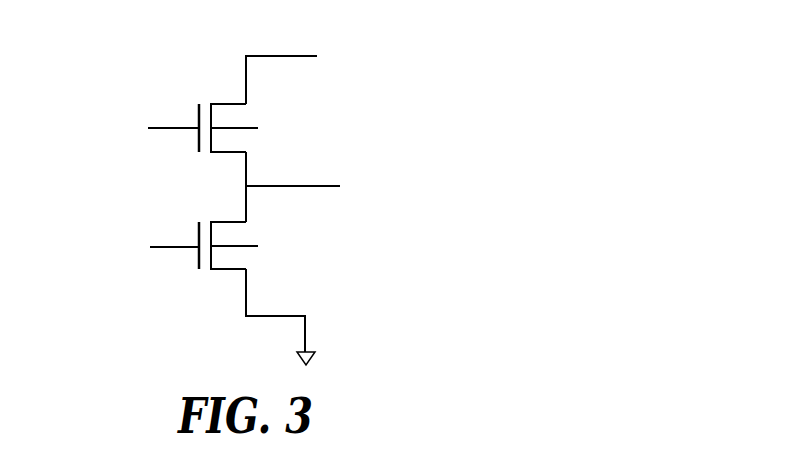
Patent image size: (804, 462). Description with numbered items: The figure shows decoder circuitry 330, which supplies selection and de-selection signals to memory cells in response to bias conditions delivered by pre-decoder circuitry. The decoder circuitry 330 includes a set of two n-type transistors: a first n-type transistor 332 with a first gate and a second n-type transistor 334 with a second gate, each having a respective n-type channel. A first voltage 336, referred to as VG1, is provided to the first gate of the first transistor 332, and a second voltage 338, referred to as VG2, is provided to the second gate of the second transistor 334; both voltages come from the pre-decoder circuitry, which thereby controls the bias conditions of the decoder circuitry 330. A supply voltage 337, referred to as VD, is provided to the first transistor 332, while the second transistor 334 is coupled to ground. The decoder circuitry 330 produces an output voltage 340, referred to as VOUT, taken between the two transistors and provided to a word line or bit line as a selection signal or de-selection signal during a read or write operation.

The decoder circuitry 330 is at (108, 35).
The first n-type transistor 332 is at (221, 108).
The second n-type transistor 334 is at (222, 263).
The first voltage 336 is at (100, 130).
The supply voltage 337 is at (360, 60).
The second voltage 338 is at (99, 243).
The output voltage 340 is at (417, 187).